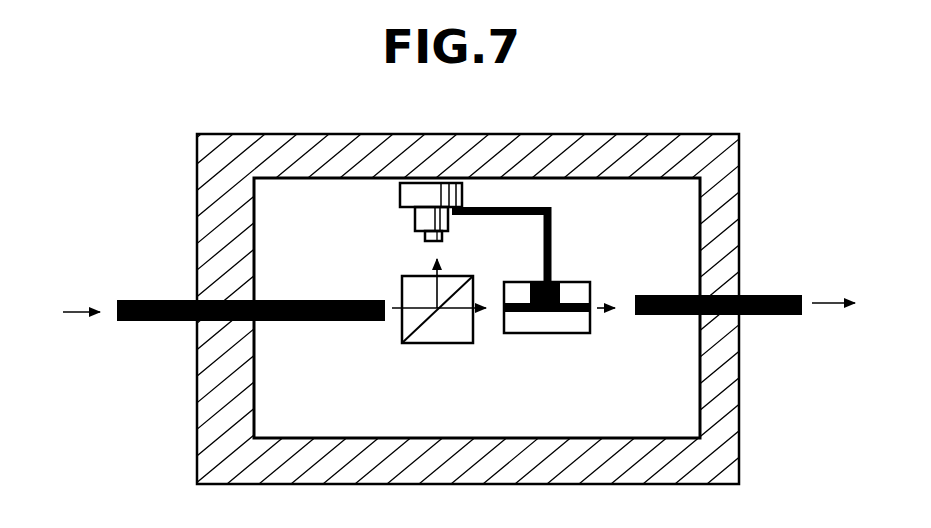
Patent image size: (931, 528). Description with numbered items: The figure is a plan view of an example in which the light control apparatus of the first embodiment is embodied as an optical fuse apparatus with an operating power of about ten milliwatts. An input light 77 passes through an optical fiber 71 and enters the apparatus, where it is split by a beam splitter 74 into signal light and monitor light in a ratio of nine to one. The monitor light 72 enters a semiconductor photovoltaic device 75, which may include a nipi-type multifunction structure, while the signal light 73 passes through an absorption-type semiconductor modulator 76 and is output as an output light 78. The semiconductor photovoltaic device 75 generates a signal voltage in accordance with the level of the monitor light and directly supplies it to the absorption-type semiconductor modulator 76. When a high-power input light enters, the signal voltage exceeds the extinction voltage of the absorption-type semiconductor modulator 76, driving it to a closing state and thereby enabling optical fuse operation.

The optical fiber 71 is at (165, 300).
The monitor light 72 is at (433, 265).
The signal light 73 is at (463, 312).
The beam splitter 74 is at (442, 333).
The semiconductor photovoltaic device 75 is at (444, 190).
The absorption-type semiconductor modulator 76 is at (589, 282).
The input light 77 is at (78, 315).
The output light 78 is at (833, 305).